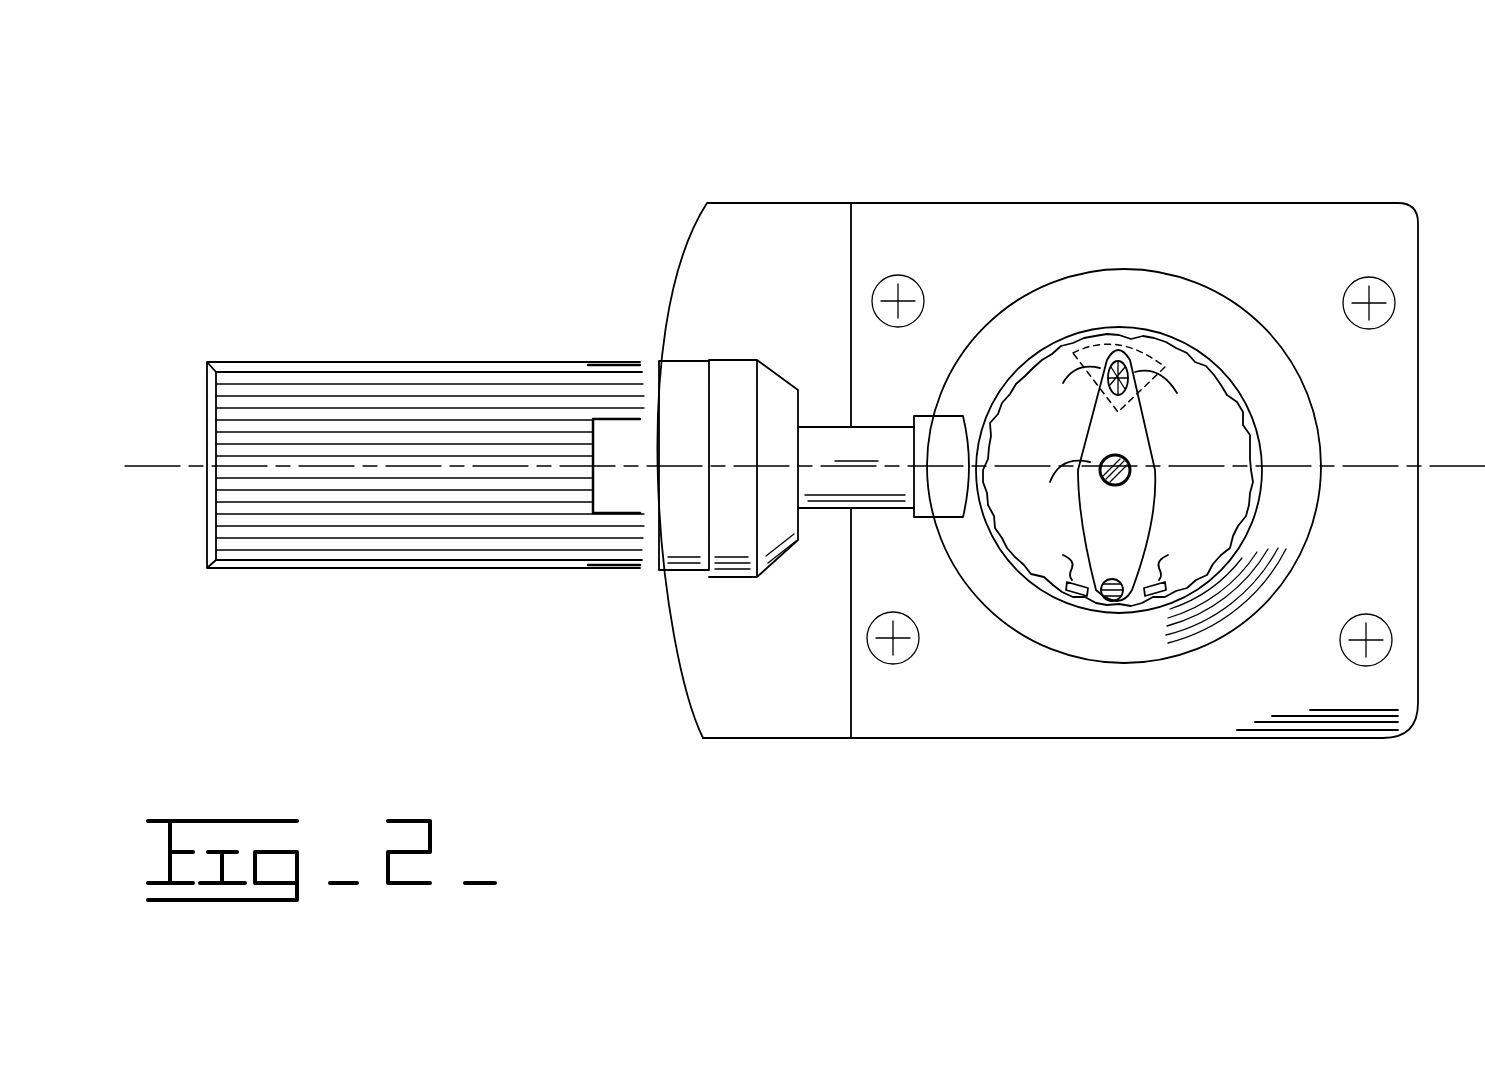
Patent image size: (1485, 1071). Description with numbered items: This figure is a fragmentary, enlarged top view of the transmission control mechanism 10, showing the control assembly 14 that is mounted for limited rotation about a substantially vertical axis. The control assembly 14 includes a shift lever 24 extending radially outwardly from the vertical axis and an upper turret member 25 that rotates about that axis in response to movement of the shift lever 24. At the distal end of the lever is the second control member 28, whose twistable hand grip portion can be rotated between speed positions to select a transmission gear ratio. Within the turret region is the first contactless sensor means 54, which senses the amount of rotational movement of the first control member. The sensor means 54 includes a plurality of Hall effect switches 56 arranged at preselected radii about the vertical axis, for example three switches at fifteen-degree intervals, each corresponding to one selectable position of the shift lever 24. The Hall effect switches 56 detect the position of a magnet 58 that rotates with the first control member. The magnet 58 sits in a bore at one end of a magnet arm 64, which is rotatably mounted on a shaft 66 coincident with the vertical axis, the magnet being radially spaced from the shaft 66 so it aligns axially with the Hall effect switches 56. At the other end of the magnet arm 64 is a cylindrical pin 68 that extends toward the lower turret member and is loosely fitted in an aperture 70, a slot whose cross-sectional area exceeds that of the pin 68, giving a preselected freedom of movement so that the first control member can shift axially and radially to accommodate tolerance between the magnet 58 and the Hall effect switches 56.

The transmission control mechanism 10 is at (674, 143).
The control assembly 14 is at (868, 145).
The shift lever 24 is at (887, 466).
The upper turret member 25 is at (1318, 395).
The second control member 28 is at (272, 310).
The first contactless sensor means 54 is at (1027, 625).
The Hall effect switches 56 is at (1116, 475).
The magnet 58 is at (1090, 592).
The magnet arm 64 is at (1155, 452).
The shaft 66 is at (1052, 486).
The cylindrical pin 68 is at (1076, 384).
The aperture 70 is at (1136, 380).